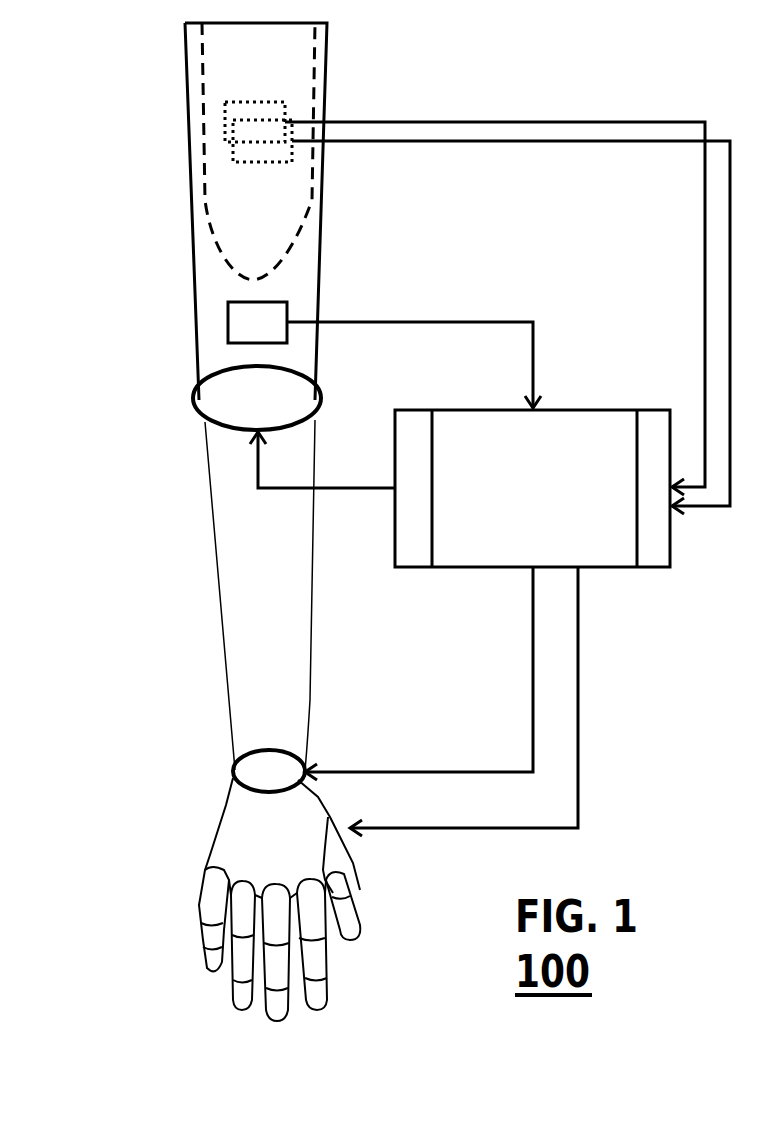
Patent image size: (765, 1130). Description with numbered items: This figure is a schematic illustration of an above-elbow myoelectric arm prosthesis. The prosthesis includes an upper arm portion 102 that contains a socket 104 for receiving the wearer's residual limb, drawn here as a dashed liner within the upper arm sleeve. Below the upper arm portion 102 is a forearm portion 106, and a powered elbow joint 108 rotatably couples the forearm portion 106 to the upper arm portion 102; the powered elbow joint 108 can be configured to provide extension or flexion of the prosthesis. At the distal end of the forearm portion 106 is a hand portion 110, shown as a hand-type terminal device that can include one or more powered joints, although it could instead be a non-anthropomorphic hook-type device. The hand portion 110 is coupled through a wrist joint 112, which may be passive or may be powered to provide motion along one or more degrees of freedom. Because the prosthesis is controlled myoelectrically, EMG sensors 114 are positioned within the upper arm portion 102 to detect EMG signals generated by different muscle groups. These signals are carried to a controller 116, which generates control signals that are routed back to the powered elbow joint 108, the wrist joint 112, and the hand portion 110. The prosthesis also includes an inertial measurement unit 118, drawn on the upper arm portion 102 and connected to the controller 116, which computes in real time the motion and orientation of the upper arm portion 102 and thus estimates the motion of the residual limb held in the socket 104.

The upper arm portion 102 is at (193, 302).
The socket 104 is at (213, 233).
The forearm portion 106 is at (212, 525).
The powered elbow joint 108 is at (193, 397).
The hand portion 110 is at (215, 838).
The wrist joint 112 is at (233, 773).
The EMG sensors 114 is at (230, 142).
The controller 116 is at (487, 623).
The inertial measurement unit 118 is at (228, 323).